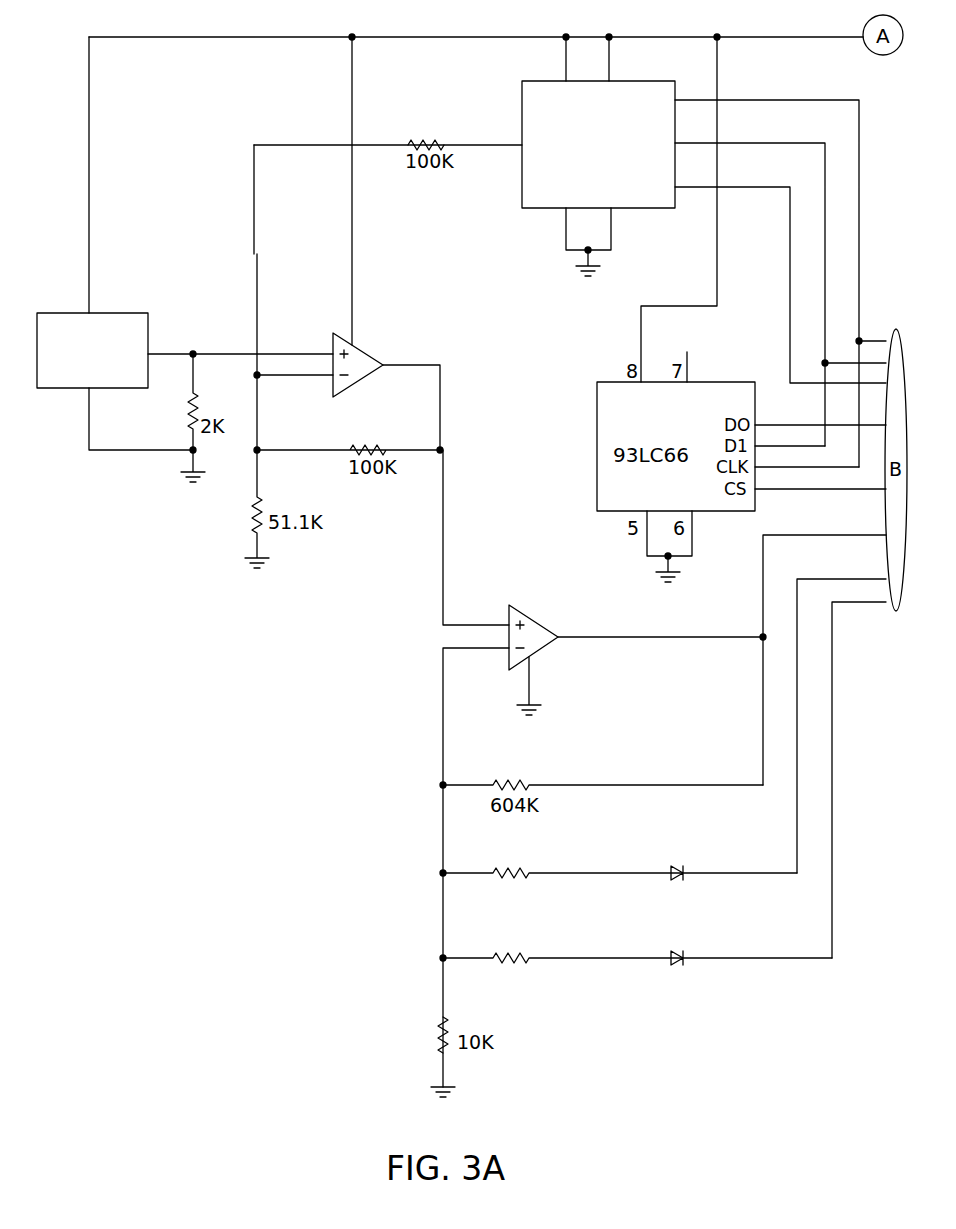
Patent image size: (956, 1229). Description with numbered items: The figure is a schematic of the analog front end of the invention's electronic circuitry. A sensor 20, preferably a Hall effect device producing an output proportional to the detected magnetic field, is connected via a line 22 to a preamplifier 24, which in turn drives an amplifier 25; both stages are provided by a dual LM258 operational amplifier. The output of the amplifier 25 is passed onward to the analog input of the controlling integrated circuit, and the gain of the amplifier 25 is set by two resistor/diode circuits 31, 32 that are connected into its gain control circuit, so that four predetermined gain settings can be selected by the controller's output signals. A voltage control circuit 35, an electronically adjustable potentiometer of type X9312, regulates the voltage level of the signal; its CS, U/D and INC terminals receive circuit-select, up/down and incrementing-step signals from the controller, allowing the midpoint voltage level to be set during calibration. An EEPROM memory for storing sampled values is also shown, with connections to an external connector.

The sensor 20 is at (117, 313).
The line 22 is at (167, 353).
The preamplifier 24 is at (362, 378).
The amplifier 25 is at (548, 648).
The resistor/diode circuit 31 is at (593, 866).
The resistor/diode circuit 32 is at (596, 951).
The voltage control circuit 35 is at (522, 183).